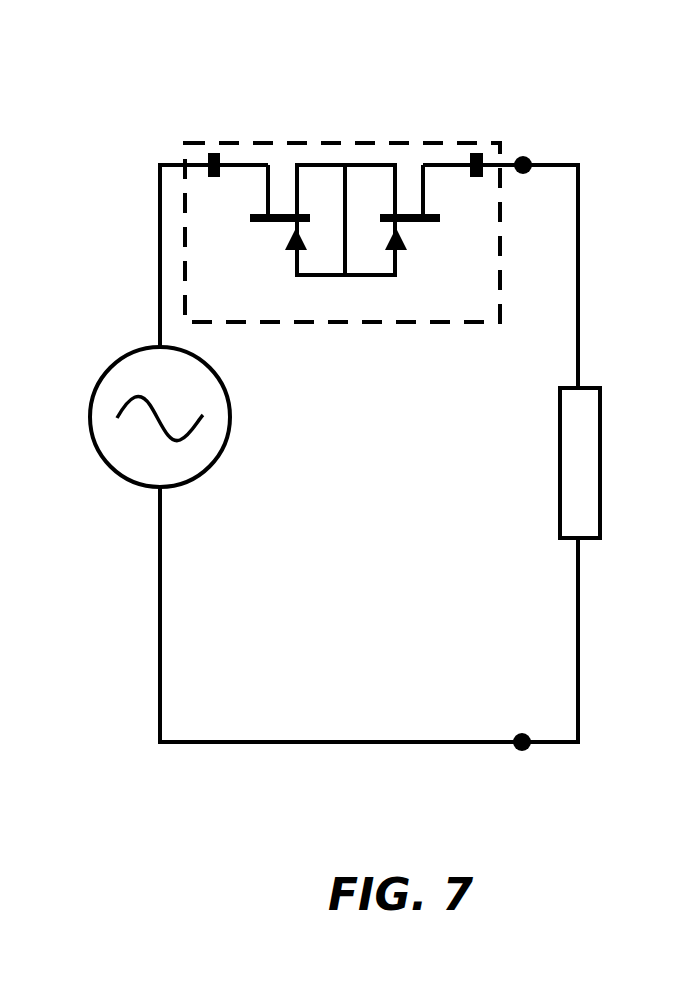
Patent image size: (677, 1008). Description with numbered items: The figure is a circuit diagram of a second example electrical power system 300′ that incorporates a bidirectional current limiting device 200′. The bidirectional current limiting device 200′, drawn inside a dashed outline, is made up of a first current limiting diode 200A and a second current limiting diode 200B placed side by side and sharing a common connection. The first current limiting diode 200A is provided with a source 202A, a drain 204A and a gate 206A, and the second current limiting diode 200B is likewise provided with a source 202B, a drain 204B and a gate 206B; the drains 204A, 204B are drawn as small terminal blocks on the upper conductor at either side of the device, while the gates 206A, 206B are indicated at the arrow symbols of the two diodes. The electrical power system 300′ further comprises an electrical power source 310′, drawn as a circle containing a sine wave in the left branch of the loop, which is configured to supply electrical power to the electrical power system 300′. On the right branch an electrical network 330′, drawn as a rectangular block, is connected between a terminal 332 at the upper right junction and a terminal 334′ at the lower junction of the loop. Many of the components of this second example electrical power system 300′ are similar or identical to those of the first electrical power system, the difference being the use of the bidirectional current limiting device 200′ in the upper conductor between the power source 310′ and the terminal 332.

The bidirectional current limiting device 200′ is at (256, 110).
The first current limiting diode 200A is at (272, 309).
The second current limiting diode 200B is at (493, 309).
The source 202A is at (323, 170).
The source 202B is at (372, 170).
The drain 204A is at (243, 165).
The drain 204B is at (452, 165).
The gate 206A is at (290, 238).
The gate 206B is at (398, 252).
The electrical power system 300′ is at (112, 822).
The electrical power source 310′ is at (210, 475).
The electrical network 330′ is at (602, 497).
The terminal 332 is at (523, 165).
The terminal 334′ is at (520, 750).